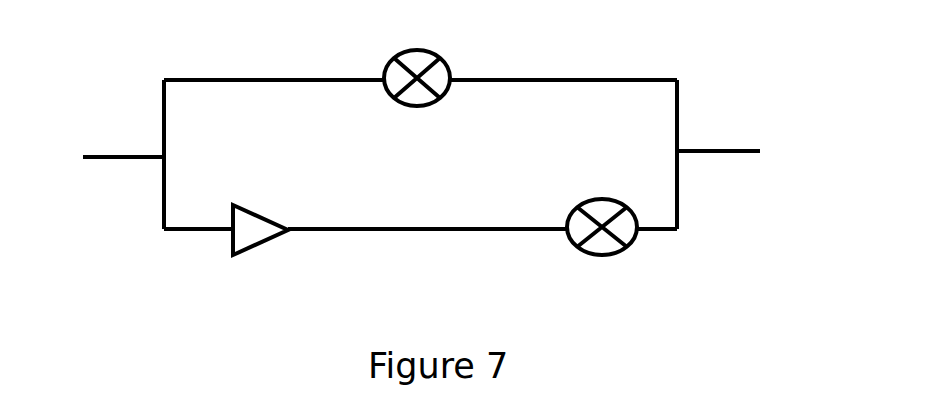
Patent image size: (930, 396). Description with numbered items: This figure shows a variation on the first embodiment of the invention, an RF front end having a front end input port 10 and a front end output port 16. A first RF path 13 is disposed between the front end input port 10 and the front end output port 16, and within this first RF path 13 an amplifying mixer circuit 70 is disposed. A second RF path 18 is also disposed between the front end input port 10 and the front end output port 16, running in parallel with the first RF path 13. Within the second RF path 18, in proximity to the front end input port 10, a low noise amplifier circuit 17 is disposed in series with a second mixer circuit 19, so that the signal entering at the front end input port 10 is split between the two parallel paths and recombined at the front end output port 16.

The front end input port 10 is at (104, 157).
The first RF path 13 is at (242, 80).
The front end output port 16 is at (725, 151).
The low noise amplifier circuit 17 is at (257, 250).
The second RF path 18 is at (410, 228).
The second mixer circuit 19 is at (623, 247).
The amplifying mixer circuit 70 is at (450, 76).